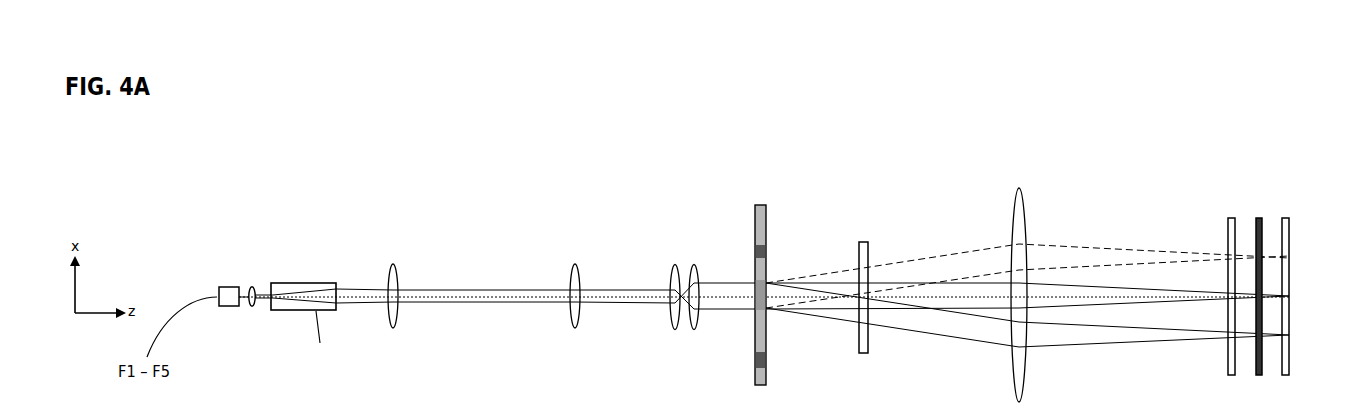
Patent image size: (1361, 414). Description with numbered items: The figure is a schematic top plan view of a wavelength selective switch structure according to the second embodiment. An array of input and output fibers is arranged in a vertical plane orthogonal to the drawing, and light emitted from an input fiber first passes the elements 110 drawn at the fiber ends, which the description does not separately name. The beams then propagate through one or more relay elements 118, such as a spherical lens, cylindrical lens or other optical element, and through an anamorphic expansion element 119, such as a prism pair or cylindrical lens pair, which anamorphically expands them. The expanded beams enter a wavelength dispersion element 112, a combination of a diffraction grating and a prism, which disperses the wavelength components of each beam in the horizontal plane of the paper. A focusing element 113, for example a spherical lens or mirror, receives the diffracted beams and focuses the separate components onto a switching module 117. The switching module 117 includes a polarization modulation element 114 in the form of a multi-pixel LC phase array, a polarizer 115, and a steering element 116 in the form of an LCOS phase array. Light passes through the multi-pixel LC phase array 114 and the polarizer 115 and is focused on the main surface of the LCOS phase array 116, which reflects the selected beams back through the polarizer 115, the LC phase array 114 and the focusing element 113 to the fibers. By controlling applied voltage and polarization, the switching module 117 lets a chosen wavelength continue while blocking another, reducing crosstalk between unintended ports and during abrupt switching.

The collimating lenses for fibers F1-F5 110 is at (253, 286).
The relay element 118 is at (575, 345).
The anamorphic expansion element 119 is at (685, 265).
The wavelength dispersion element 112 is at (872, 390).
The focusing element 113 is at (1017, 188).
The switching module 117 is at (1252, 239).
The polarization modulation element 114 is at (1227, 216).
The polarizer 115 is at (1257, 211).
The steering element 116 is at (1311, 273).